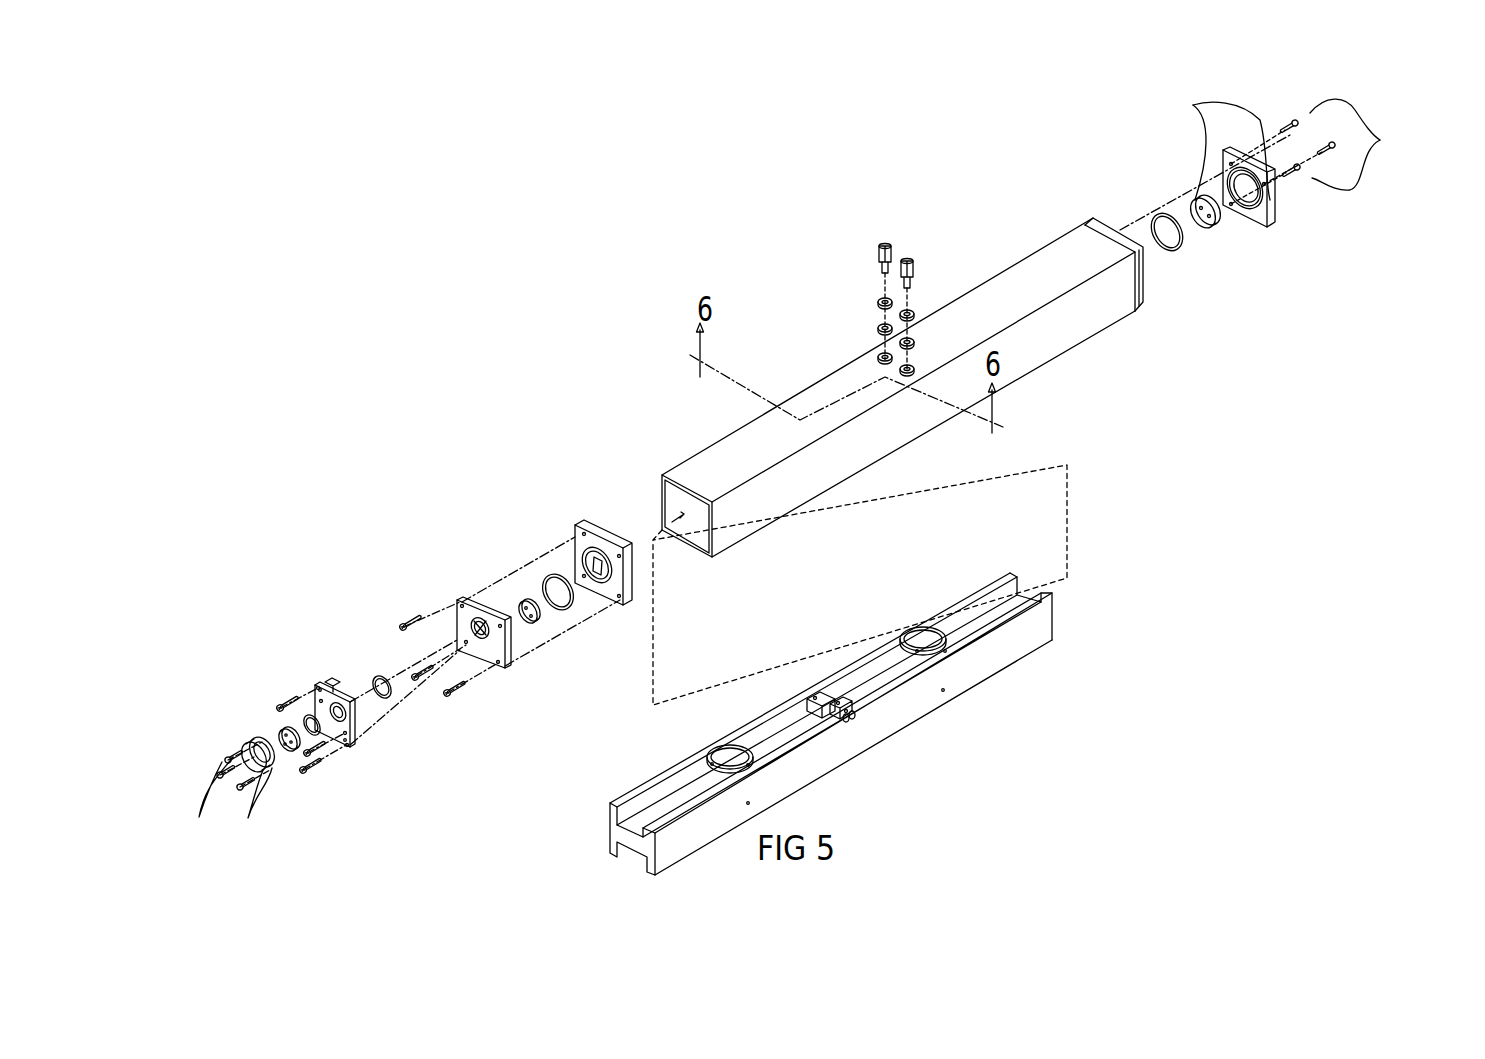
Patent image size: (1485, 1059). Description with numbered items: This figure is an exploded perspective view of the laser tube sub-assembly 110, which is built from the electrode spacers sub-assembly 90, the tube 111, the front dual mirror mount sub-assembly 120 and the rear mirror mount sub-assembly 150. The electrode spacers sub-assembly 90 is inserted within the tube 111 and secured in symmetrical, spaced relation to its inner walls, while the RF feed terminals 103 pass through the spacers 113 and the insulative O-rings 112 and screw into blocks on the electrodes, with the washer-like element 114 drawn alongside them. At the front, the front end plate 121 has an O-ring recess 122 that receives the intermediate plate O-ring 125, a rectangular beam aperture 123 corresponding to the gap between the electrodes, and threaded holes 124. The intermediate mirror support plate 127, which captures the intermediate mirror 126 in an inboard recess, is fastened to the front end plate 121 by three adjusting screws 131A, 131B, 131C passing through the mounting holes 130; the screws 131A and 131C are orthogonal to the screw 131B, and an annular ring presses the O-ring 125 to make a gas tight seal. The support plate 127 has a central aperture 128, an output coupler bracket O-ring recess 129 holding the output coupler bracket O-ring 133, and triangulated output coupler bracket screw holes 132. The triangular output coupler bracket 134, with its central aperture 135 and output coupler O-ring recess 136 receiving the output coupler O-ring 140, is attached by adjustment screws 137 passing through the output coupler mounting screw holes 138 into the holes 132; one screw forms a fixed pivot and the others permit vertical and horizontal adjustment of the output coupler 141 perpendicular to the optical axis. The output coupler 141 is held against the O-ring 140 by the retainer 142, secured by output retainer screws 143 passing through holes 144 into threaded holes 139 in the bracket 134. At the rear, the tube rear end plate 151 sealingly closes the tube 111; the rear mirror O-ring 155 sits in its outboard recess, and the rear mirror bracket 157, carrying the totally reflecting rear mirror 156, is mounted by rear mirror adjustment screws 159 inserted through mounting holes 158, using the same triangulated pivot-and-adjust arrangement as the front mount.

The electrode spacers sub-assembly 90 is at (925, 720).
The RF feed terminals 103 is at (908, 255).
The laser tube sub-assembly 110 is at (792, 365).
The tube 111 is at (1033, 352).
The insulative O-rings 112 is at (878, 328).
The spacers 113 is at (878, 302).
The lock washer 114 is at (878, 358).
The front dual mirror mount sub-assembly 120 is at (400, 527).
The front end plate 121 is at (578, 524).
The O-ring recess 122 is at (612, 572).
The rectangular beam aperture 123 is at (602, 560).
The threaded holes 124 is at (582, 535).
The intermediate plate O-ring 125 is at (592, 586).
The intermediate mirror 126 is at (560, 610).
The intermediate mirror support plate 127 is at (470, 600).
The central aperture 128 is at (481, 618).
The output coupler bracket O-ring recess 129 is at (535, 622).
The mounting holes 130 is at (462, 604).
The adjusting screw 131A is at (405, 632).
The adjusting screw 131B is at (418, 680).
The adjusting screw 131C is at (450, 697).
The output coupler bracket screw holes 132 is at (467, 644).
The output coupler bracket O-ring 133 is at (384, 700).
The output coupler bracket 134 is at (325, 690).
The central aperture 135 is at (342, 705).
The output coupler O-ring recess 136 is at (340, 700).
The adjustment screws 137 is at (278, 708).
The output coupler mounting screw holes 138 is at (316, 688).
The threaded holes 139 is at (320, 700).
The output coupler O-ring 140 is at (304, 726).
The output coupler 141 is at (289, 753).
The retainer 142 is at (268, 770).
The output retainer screws 143 is at (199, 805).
The holes 144 is at (255, 790).
The rear mirror mount sub-assembly 150 is at (1325, 320).
The tube rear end plate 151 is at (1140, 298).
The rear mirror O-ring 155 is at (1183, 258).
The rear mirror 156 is at (1222, 228).
The rear mirror bracket 157 is at (1275, 212).
The mounting holes 158 is at (1193, 105).
The rear mirror adjustment screws 159 is at (1380, 140).